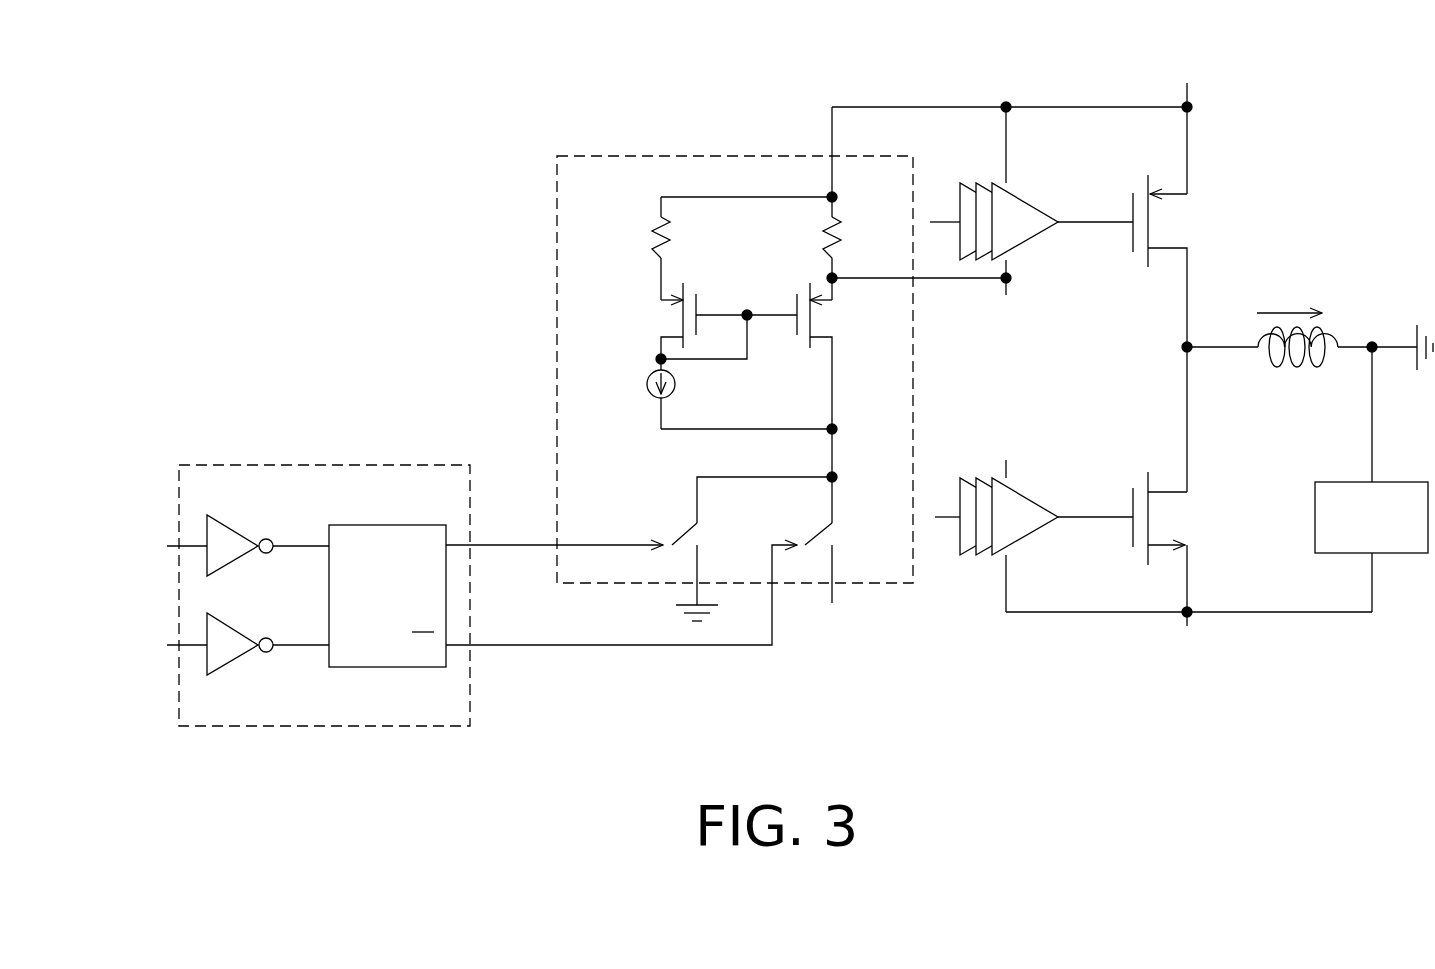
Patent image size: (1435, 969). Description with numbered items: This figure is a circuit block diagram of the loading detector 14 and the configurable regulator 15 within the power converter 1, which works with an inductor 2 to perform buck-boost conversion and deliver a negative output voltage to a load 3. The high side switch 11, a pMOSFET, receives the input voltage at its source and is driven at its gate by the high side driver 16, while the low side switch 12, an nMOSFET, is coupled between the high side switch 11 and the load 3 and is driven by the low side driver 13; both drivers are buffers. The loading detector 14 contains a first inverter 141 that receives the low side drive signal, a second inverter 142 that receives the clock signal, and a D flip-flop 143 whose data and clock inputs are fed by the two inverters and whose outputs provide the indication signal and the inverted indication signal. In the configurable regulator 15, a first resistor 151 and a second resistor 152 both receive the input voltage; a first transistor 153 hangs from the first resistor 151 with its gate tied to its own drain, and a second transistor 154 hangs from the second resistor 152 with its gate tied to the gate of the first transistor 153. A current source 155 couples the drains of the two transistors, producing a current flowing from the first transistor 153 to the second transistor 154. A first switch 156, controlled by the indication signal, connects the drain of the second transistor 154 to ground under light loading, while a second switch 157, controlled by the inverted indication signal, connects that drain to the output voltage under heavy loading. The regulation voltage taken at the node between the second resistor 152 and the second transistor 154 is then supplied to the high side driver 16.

The power converter 1 is at (357, 165).
The inductor 2 is at (1325, 327).
The load 3 is at (1400, 482).
The high side switch 11 is at (1168, 246).
The low side switch 12 is at (1170, 492).
The low side driver 13 is at (985, 556).
The loading detector 14 is at (338, 463).
The configurable regulator 15 is at (557, 294).
The high side driver 16 is at (985, 183).
The first inverter 141 is at (232, 530).
The second inverter 142 is at (232, 661).
The D flip-flop 143 is at (382, 525).
The first resistor 151 is at (657, 224).
The second resistor 152 is at (836, 236).
The first transistor 153 is at (676, 336).
The second transistor 154 is at (820, 336).
The current source 155 is at (650, 381).
The first switch 156 is at (682, 536).
The second switch 157 is at (813, 536).